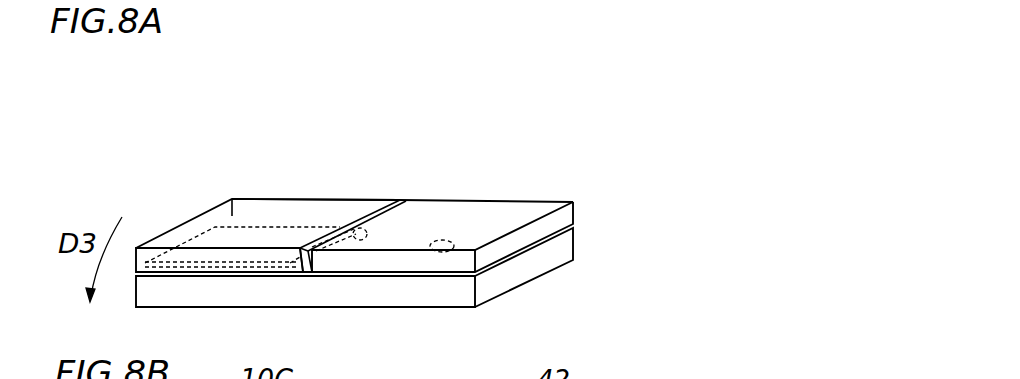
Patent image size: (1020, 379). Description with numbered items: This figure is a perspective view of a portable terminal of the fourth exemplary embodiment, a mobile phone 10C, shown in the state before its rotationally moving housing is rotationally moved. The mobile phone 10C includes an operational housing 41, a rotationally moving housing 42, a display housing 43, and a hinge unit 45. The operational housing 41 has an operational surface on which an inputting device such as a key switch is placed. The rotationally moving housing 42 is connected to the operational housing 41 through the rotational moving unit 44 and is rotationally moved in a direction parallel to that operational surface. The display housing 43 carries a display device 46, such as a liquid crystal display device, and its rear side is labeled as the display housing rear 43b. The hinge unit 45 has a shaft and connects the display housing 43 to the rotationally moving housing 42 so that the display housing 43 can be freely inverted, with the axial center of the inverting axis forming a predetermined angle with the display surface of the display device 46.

The mobile phone 10C is at (429, 152).
The operational housing 41 is at (517, 270).
The rotationally moving housing 42 is at (497, 212).
The display housing 43 is at (279, 197).
The Display Housing Rear 43b is at (232, 200).
The rotational moving unit 44 is at (436, 240).
The hinge unit 45 is at (353, 239).
The display device 46 is at (200, 247).